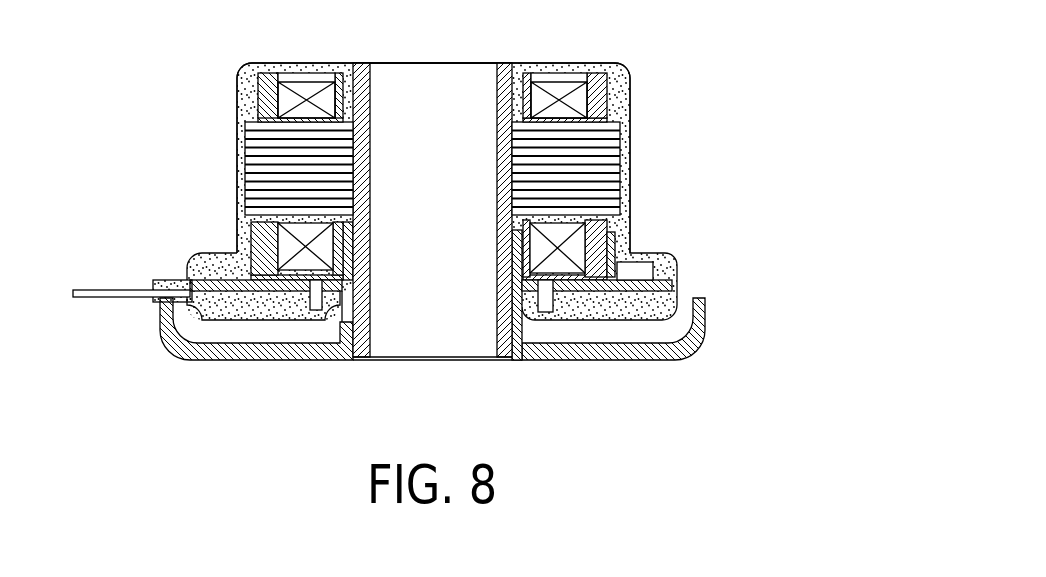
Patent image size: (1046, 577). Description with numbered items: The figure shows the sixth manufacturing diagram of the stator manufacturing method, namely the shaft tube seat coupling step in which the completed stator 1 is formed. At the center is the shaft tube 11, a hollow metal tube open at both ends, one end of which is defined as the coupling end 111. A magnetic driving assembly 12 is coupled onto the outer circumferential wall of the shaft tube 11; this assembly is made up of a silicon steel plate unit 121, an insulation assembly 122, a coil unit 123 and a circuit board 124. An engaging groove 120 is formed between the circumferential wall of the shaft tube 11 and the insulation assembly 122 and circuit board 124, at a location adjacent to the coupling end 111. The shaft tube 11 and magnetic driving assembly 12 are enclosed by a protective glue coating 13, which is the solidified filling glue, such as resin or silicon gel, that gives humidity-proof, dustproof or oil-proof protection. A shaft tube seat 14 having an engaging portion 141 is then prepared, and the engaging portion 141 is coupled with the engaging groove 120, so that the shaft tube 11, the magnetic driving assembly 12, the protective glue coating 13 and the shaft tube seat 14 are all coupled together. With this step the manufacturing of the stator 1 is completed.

The stator 1 is at (193, 172).
The shaft tube 11 is at (395, 332).
The coupling end 111 is at (505, 340).
The magnetic driving assembly 12 is at (798, 22).
The engaging groove 120 is at (563, 288).
The silicon steel plate unit 121 is at (610, 140).
The insulation assembly 122 is at (602, 243).
The coil unit 123 is at (577, 93).
The circuit board 124 is at (628, 283).
The protective glue coating 13 is at (250, 100).
The shaft tube seat 14 is at (673, 348).
The engaging portion 141 is at (512, 245).